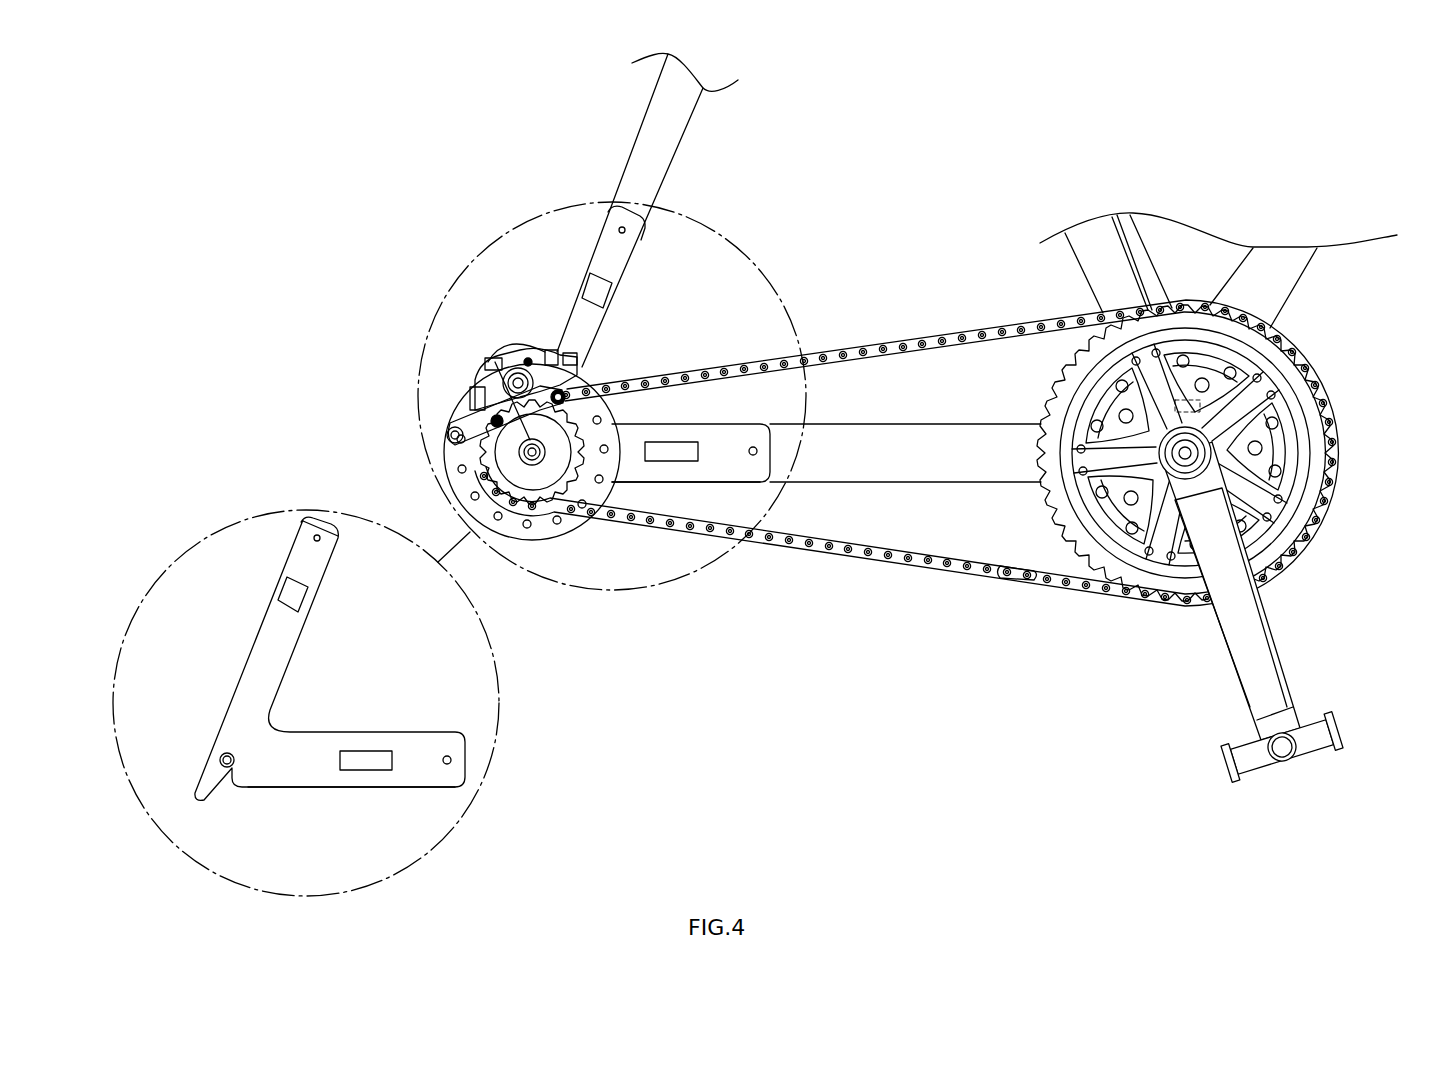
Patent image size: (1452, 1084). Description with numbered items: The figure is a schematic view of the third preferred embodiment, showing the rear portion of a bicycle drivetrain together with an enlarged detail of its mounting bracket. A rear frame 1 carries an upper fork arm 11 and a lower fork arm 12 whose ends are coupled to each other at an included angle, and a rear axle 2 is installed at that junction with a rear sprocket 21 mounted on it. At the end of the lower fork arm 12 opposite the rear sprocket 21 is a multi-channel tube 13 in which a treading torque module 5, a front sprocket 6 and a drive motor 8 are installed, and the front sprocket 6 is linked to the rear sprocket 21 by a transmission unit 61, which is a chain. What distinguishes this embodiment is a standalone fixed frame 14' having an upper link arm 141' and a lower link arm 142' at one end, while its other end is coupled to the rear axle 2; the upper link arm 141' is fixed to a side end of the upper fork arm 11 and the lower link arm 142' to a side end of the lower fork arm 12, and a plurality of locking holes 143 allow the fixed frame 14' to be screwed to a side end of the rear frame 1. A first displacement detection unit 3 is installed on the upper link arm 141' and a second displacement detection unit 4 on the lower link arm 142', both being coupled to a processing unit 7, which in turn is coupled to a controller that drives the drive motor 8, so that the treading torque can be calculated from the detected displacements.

The rear frame 1 is at (623, 79).
The upper fork arm 11 is at (640, 152).
The lower fork arm 12 is at (943, 470).
The fixed frame 14' is at (456, 494).
The upper link arm 141' is at (428, 349).
The lower link arm 142' is at (526, 701).
The locking holes 143 is at (757, 451).
The rear axle 2 is at (473, 410).
The rear sprocket 21 is at (578, 512).
The first displacement detection unit 3 is at (589, 288).
The second displacement detection unit 4 is at (683, 440).
The treading torque module 5 is at (1283, 550).
The front sprocket 6 is at (1100, 590).
The transmission unit 61 is at (1014, 584).
The processing unit 7 is at (1183, 400).
The drive motor 8 is at (1247, 460).
The multi-channel tube 13 is at (1277, 455).